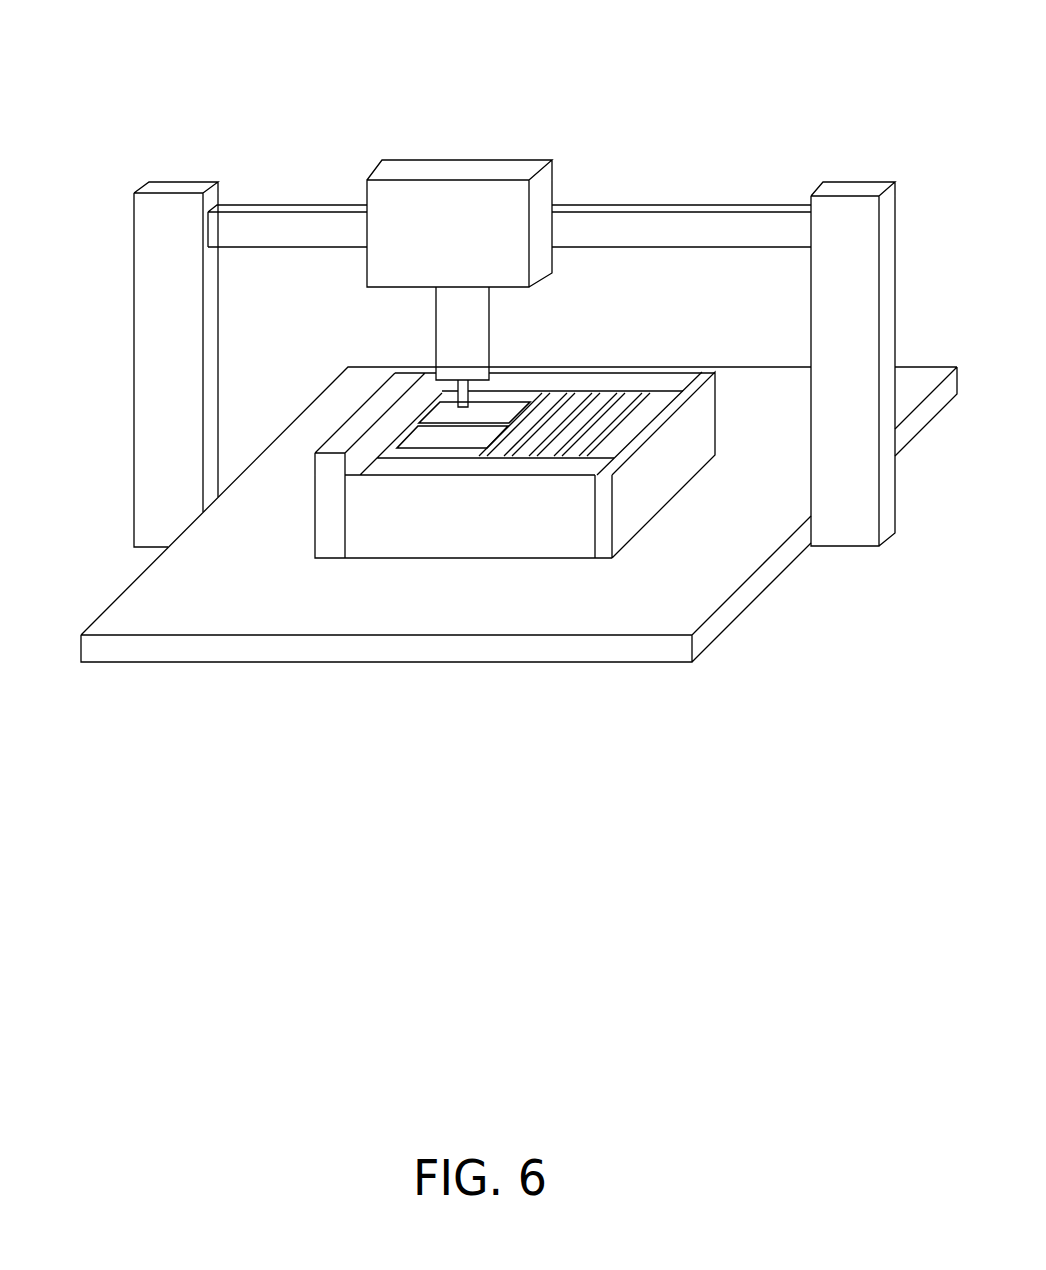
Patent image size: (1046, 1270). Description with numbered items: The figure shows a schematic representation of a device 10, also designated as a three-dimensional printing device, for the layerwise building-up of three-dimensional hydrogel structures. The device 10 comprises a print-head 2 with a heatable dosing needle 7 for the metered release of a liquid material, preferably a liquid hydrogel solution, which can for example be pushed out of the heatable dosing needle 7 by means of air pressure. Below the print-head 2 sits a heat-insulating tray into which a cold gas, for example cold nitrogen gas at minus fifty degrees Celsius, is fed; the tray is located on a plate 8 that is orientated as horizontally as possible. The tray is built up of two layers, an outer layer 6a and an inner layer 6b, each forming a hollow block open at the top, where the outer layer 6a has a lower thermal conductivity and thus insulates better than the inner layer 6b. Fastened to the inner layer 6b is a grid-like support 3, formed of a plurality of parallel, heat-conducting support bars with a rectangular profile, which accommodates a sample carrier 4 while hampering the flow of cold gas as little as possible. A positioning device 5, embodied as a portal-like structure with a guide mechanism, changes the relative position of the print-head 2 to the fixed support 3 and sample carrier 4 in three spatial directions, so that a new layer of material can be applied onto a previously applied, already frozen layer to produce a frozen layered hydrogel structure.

The device 10 is at (499, 333).
The print-head 2 is at (457, 313).
The grid-like support 3 is at (558, 412).
The sample carrier 4 is at (502, 407).
The positioning device 5 is at (262, 228).
The outer layer 6a is at (322, 520).
The inner layer 6b is at (658, 397).
The heatable dosing needle 7 is at (456, 388).
The plate 8 is at (130, 598).